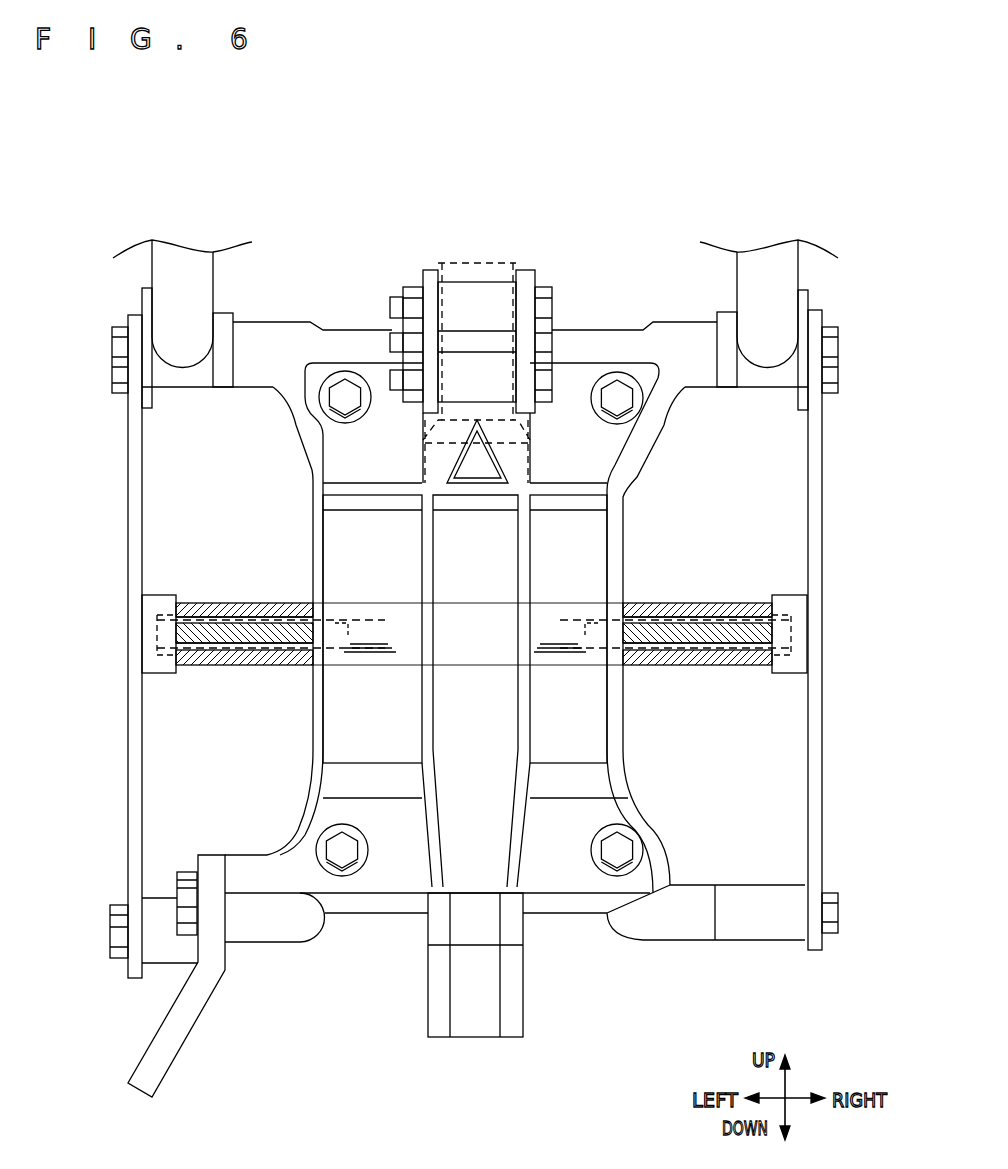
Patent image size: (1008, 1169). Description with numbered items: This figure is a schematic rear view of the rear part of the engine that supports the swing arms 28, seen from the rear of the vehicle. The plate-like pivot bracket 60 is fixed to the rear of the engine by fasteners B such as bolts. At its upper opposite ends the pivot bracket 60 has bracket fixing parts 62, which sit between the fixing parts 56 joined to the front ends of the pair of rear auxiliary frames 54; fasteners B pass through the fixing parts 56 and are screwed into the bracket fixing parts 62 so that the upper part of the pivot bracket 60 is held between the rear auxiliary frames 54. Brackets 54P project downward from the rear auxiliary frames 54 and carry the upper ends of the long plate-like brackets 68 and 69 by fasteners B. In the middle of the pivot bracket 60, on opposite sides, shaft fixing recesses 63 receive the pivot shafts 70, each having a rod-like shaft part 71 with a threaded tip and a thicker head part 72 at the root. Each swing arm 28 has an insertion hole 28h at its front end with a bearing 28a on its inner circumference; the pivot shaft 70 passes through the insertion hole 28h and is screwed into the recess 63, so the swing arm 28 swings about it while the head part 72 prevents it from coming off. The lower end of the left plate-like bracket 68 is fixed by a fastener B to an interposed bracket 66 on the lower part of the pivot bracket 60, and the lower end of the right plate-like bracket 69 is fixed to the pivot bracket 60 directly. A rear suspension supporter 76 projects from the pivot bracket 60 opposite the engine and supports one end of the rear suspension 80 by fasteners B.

The swing arm 28 is at (247, 603).
The bearing 28a is at (216, 603).
The insertion hole 28h is at (283, 630).
The rear auxiliary frame 54 is at (205, 272).
The bracket 54P is at (150, 400).
The fixing part 56 is at (223, 313).
The pivot bracket 60 is at (630, 511).
The bracket fixing part 62 is at (280, 322).
The shaft fixing recess 63 is at (350, 624).
The interposed bracket 66 is at (193, 1030).
The plate-like bracket 68 is at (128, 513).
The plate-like bracket 69 is at (822, 508).
The pivot shaft 70 is at (214, 638).
The shaft part 71 is at (272, 643).
The head part 72 is at (165, 673).
The rear suspension supporter 76 is at (477, 295).
The rear suspension 80 is at (530, 470).
The fastener B is at (112, 331).